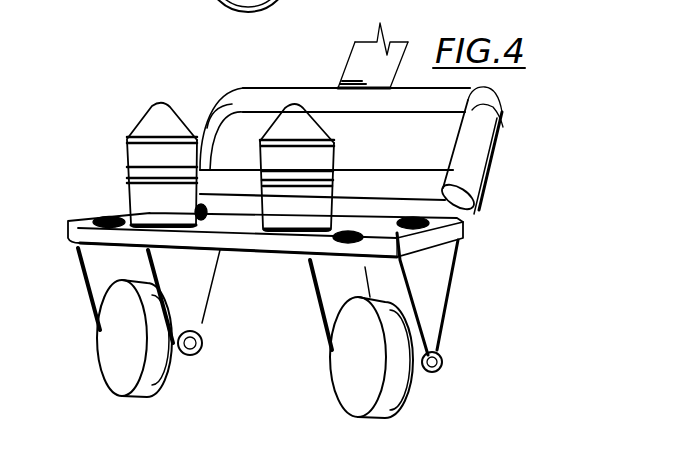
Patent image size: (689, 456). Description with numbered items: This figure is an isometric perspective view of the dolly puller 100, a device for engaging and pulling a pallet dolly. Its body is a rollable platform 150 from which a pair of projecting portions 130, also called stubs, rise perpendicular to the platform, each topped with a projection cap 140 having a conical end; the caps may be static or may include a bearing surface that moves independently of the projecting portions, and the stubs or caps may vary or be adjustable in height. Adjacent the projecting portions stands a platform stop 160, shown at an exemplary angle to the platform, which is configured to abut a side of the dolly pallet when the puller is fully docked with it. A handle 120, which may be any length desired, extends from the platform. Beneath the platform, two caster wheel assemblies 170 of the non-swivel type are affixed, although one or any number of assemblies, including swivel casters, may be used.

The dolly puller 100 is at (533, 102).
The handle 120 is at (347, 72).
The projecting portions 130 is at (150, 205).
The projection cap 140 is at (157, 125).
The rollable platform 150 is at (457, 238).
The platform stop 160 is at (480, 210).
The caster wheel assemblies 170 is at (117, 335).